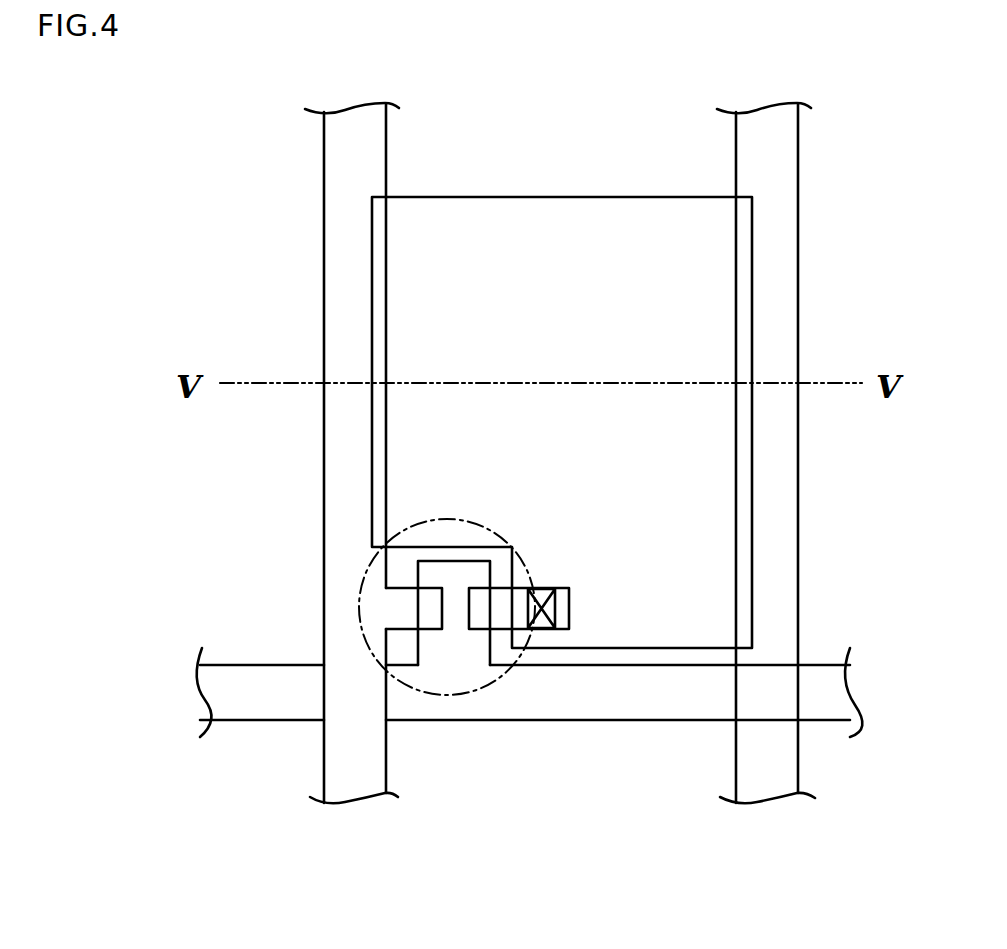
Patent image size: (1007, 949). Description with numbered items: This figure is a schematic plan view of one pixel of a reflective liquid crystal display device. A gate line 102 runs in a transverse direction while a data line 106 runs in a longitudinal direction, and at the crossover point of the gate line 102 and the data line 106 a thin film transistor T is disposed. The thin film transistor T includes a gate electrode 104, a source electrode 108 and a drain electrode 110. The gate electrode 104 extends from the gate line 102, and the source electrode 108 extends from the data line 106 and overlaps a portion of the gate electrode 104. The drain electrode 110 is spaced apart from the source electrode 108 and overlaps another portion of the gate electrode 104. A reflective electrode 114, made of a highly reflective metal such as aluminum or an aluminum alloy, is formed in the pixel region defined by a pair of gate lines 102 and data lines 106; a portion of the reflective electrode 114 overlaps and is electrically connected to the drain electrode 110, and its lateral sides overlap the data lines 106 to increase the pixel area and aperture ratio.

The gate line 102 is at (637, 707).
The gate electrode 104 is at (453, 605).
The data line 106 is at (337, 275).
The source electrode 108 is at (402, 618).
The drain electrode 110 is at (505, 612).
The reflective electrode 114 is at (752, 253).
The thin film transistor T is at (363, 593).